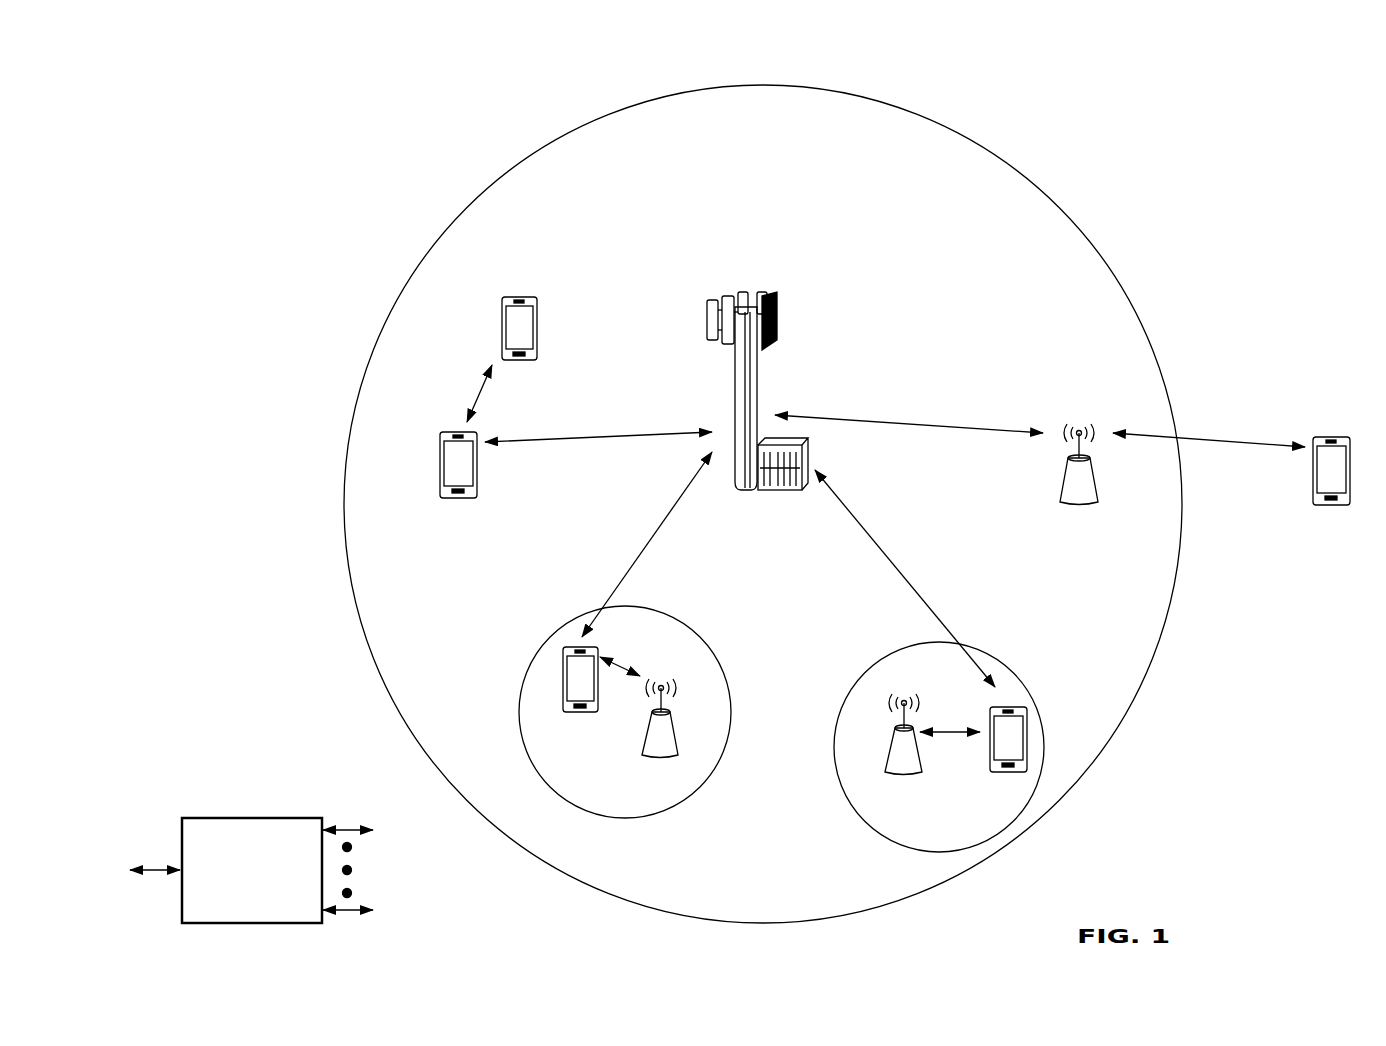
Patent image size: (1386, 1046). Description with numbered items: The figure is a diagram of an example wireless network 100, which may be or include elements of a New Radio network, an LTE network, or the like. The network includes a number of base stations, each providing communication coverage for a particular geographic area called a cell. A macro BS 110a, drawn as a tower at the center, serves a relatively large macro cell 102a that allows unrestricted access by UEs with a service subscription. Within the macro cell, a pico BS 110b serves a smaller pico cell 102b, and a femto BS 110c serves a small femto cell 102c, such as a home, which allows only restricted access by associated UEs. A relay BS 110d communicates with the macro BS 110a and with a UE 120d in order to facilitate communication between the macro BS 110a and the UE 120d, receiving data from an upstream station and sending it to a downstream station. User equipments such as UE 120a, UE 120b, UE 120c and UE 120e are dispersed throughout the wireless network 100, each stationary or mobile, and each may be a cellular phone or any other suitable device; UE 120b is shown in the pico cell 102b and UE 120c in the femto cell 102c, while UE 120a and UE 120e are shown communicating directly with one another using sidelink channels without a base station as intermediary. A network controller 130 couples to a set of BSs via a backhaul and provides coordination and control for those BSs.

The wireless network 100 is at (232, 78).
The macro cell 102a is at (1043, 188).
The pico cell 102b is at (719, 642).
The femto cell 102c is at (870, 652).
The macro BS 110a is at (752, 284).
The pico BS 110b is at (682, 742).
The femto BS 110c is at (890, 758).
The relay BS 110d is at (1079, 424).
The UE 120a is at (438, 460).
The UE 120b is at (570, 713).
The UE 120c is at (993, 773).
The UE 120d is at (1337, 436).
The UE 120e is at (500, 312).
The network controller 130 is at (248, 816).